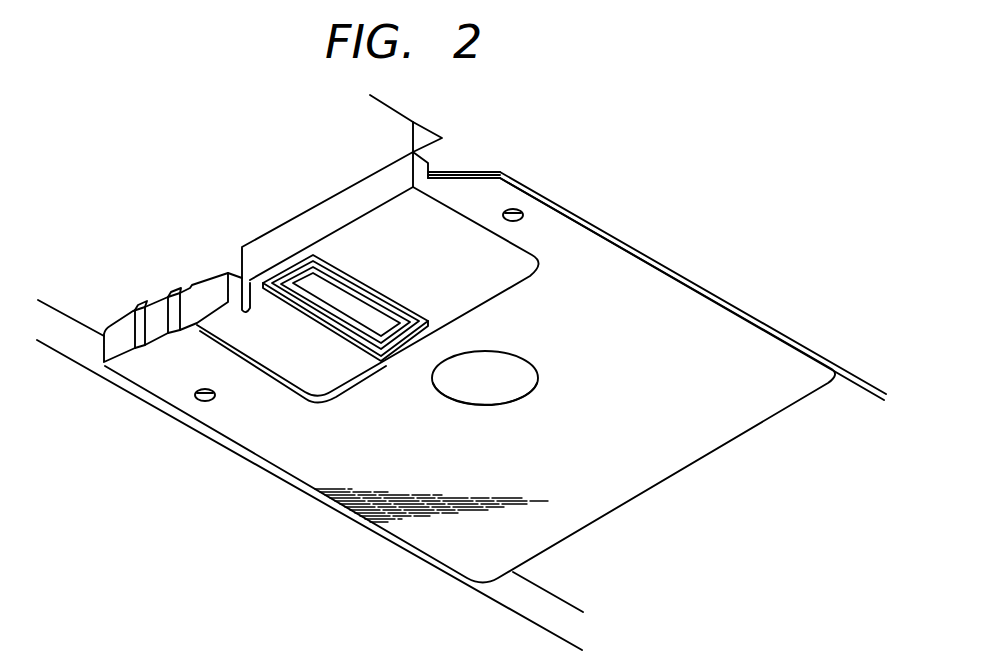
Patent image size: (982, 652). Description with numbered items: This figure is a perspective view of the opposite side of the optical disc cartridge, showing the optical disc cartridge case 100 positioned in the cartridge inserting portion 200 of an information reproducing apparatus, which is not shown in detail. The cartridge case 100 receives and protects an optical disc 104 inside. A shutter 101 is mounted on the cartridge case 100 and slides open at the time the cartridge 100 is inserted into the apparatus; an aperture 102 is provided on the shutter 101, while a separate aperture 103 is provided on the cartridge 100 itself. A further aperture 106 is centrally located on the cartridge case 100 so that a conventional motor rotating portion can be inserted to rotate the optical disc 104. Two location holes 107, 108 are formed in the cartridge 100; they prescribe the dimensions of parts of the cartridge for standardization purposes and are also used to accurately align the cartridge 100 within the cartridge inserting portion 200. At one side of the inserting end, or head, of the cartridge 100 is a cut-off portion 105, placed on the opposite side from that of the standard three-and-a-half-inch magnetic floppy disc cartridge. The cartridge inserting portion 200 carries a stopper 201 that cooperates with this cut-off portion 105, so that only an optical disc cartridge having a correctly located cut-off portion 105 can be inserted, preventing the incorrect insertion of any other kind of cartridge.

The optical disc cartridge case 100 is at (663, 450).
The shutter 101 is at (372, 250).
The aperture 102 is at (285, 272).
The aperture 103 is at (332, 312).
The optical disc 104 is at (367, 312).
The cut-off portion 105 is at (473, 180).
The aperture 106 is at (493, 385).
The location hole 107 is at (519, 221).
The location hole 108 is at (208, 401).
The cartridge inserting portion 200 is at (690, 218).
The stopper 201 is at (447, 162).